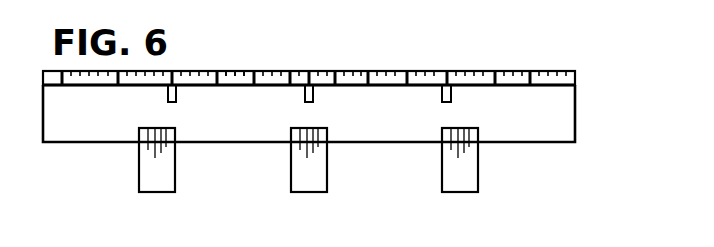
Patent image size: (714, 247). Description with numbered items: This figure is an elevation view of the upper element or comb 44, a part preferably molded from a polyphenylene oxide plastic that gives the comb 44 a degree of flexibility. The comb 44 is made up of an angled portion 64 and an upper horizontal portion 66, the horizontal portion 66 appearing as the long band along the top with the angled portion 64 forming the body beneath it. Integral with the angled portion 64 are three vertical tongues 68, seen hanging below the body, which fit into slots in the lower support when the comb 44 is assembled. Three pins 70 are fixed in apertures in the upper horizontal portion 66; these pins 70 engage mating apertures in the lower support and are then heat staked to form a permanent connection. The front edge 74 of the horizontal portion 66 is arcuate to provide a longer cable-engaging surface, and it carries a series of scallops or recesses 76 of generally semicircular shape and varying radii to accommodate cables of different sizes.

The upper element or comb 44 is at (470, 53).
The angled portion 64 is at (572, 116).
The upper horizontal portion 66 is at (328, 72).
The vertical tongues 68 is at (146, 166).
The pins 70 is at (166, 98).
The front edge 74 is at (578, 75).
The scallops or recesses 76 is at (236, 71).